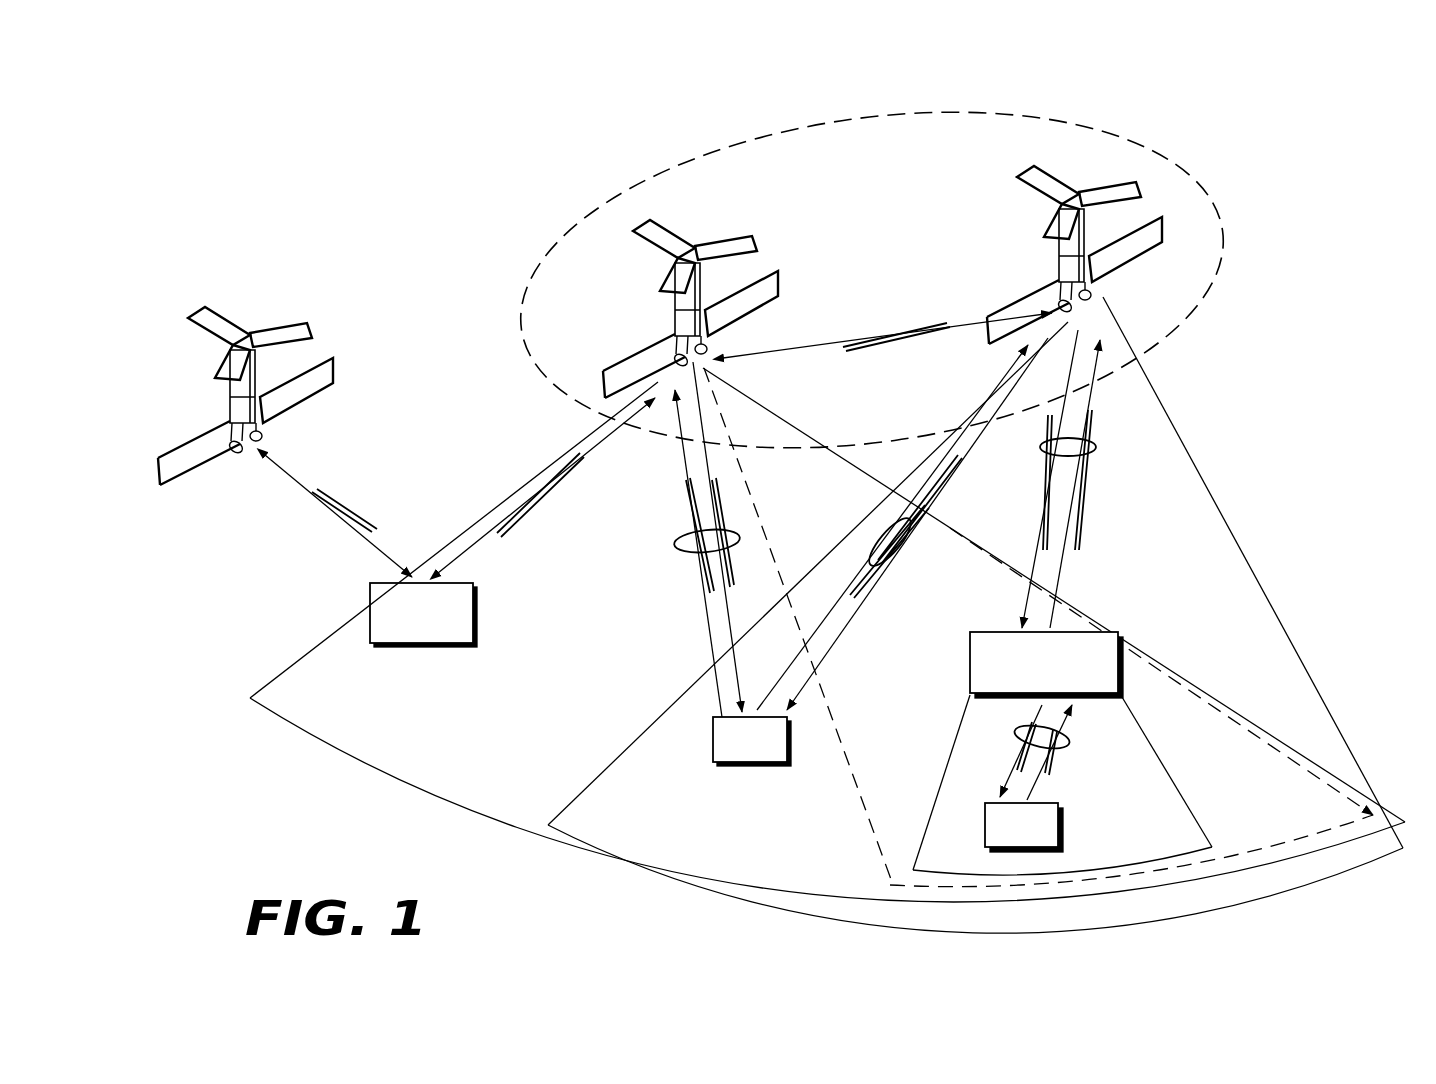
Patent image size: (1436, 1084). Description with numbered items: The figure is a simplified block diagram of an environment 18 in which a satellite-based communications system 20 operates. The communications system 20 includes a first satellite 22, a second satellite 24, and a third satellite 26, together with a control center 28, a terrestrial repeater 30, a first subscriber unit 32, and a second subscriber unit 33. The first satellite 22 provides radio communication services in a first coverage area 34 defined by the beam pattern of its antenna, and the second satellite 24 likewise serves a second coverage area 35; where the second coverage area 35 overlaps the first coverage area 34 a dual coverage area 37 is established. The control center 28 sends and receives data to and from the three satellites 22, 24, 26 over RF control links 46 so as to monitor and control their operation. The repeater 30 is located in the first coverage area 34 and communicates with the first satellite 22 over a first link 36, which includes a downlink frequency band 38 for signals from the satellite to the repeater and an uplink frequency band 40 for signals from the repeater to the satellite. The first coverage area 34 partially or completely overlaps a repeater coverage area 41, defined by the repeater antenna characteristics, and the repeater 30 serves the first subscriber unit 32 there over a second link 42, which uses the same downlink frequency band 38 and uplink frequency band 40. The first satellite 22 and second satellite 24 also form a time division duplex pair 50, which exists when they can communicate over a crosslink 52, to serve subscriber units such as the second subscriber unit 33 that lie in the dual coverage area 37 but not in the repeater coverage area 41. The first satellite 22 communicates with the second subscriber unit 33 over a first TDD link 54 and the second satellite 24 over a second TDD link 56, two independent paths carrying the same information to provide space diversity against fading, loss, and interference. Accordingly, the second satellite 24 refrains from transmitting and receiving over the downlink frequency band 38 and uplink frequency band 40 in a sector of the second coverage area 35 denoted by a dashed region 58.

The environment 18 is at (337, 849).
The satellite-based communications system 20 is at (1228, 373).
The first satellite 22 is at (1022, 303).
The second satellite 24 is at (658, 353).
The third satellite 26 is at (323, 392).
The control center 28 is at (433, 647).
The terrestrial repeater 30 is at (970, 658).
The first subscriber unit 32 is at (1063, 825).
The second subscriber unit 33 is at (735, 763).
The first coverage area 34 is at (1253, 660).
The second coverage area 35 is at (322, 726).
The first link 36 is at (1097, 450).
The dual coverage area 37 is at (618, 832).
The downlink frequency band 38 is at (1043, 500).
The uplink frequency band 40 is at (1080, 510).
The repeater coverage area 41 is at (1175, 820).
The second link 42 is at (1067, 743).
The RF control links 46 is at (328, 497).
The TDD pair 50 is at (1218, 190).
The crosslink 52 is at (872, 333).
The first TDD link 54 is at (908, 555).
The second TDD link 56 is at (680, 545).
The dashed region 58 is at (1222, 752).